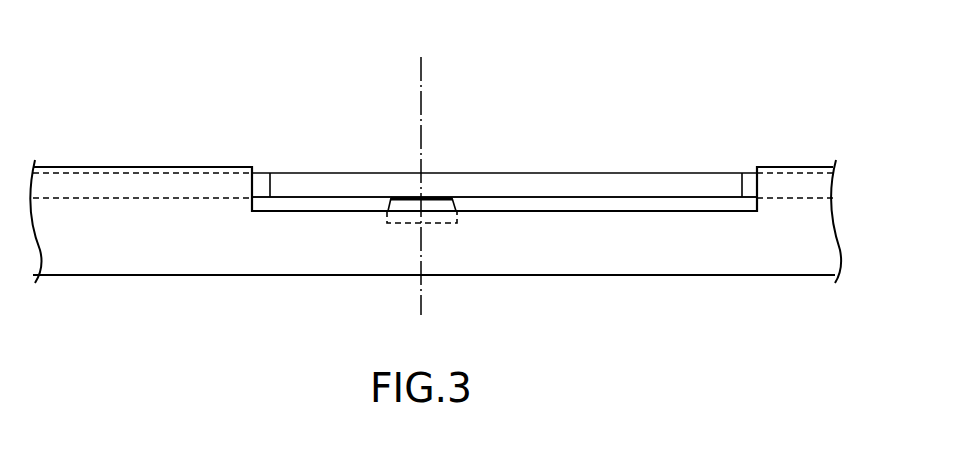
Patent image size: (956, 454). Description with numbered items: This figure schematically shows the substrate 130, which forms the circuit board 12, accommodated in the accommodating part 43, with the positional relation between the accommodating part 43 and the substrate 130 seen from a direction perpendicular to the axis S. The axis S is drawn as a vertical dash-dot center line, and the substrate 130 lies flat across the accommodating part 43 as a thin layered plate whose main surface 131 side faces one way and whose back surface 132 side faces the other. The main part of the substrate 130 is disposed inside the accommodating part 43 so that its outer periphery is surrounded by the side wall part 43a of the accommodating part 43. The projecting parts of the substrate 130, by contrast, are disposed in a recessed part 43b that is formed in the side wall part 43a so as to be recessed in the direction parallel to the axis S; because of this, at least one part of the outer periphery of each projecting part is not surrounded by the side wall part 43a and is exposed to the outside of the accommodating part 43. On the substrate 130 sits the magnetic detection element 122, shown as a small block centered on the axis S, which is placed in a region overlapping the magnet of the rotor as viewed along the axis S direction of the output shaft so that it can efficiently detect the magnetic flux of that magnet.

The accommodating part 43 is at (147, 167).
The side wall part 43a is at (218, 183).
The recessed part 43b is at (636, 209).
The circuit board 12 is at (504, 197).
The substrate 130 is at (504, 197).
The main surface 131 is at (328, 198).
The back surface 132 is at (322, 173).
The magnetic detection element 122 is at (393, 198).
The axis S is at (421, 169).